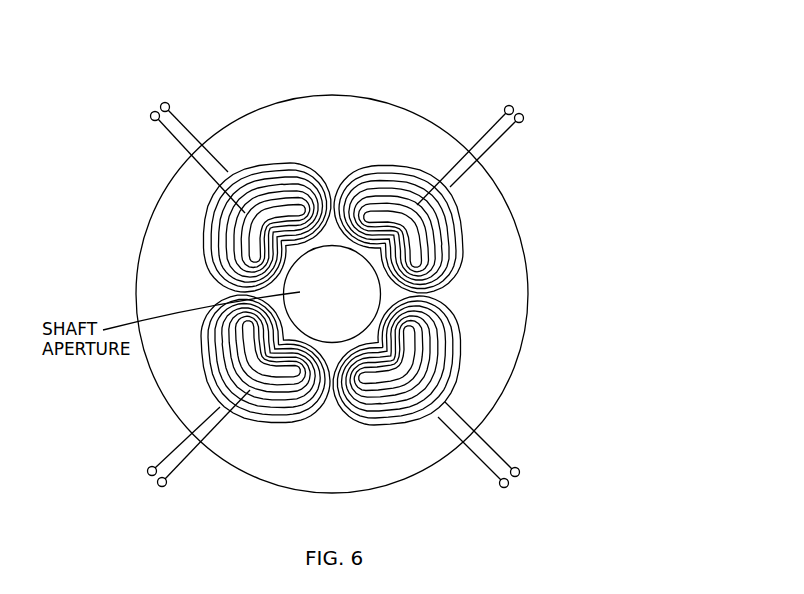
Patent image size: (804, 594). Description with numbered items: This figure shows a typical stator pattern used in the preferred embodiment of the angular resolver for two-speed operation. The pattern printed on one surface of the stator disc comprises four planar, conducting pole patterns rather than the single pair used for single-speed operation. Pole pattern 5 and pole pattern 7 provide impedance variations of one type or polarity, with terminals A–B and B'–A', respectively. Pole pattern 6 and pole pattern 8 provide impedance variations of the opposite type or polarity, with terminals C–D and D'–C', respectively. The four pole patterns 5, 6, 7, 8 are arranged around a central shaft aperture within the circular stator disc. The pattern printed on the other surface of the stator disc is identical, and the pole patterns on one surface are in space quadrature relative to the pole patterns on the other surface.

The pole pattern 5 is at (257, 160).
The pole pattern 6 is at (465, 217).
The pole pattern 7 is at (460, 397).
The pole pattern 8 is at (257, 435).